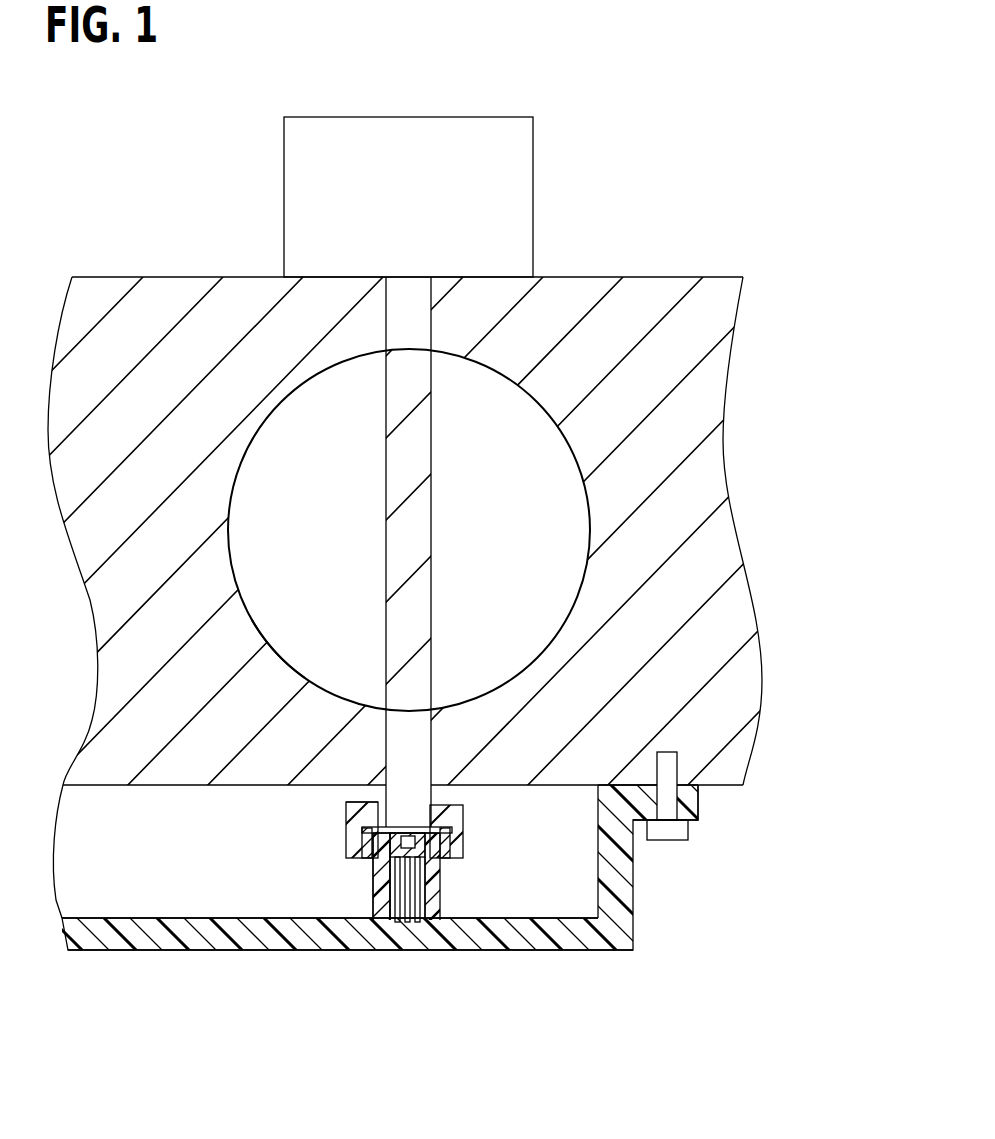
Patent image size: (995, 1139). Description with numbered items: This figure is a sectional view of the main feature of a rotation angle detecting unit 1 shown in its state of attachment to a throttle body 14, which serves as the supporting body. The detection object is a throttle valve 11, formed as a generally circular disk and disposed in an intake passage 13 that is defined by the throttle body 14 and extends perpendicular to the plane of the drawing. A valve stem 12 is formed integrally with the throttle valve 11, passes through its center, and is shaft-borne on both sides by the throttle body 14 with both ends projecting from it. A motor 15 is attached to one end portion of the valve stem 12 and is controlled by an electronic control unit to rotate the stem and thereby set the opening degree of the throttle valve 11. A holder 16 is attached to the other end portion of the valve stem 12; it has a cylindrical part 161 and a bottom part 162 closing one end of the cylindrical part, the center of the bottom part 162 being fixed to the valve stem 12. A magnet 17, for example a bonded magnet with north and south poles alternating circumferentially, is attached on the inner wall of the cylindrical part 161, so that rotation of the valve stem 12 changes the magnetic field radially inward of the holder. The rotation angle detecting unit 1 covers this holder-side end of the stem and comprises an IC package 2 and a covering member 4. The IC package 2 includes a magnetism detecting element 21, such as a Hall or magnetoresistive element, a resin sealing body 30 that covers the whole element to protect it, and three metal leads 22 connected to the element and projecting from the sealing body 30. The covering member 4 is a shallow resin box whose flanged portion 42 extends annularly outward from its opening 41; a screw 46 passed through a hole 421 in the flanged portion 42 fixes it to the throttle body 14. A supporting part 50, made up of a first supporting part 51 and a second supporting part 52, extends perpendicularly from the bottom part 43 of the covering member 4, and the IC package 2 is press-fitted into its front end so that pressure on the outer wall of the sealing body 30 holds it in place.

The rotation angle detecting unit 1 is at (351, 1029).
The IC package 2 is at (440, 848).
The covering member 4 is at (633, 926).
The throttle valve 11 is at (265, 521).
The valve stem 12 is at (400, 553).
The intake passage 13 is at (272, 648).
The throttle body 14 is at (655, 277).
The motor 15 is at (284, 203).
The holder 16 is at (345, 822).
The magnet 17 is at (378, 858).
The magnetism detecting element 21 is at (415, 840).
The leads 22 is at (398, 925).
The sealing body 30 is at (445, 815).
The opening 41 is at (597, 800).
The flanged portion 42 is at (700, 797).
The bottom part 43 is at (178, 950).
The screw 46 is at (665, 840).
The supporting part 50 is at (440, 872).
The first supporting part 51 is at (375, 886).
The second supporting part 52 is at (430, 890).
The cylindrical part 161 is at (362, 846).
The bottom part 162 is at (377, 803).
The hole 421 is at (668, 818).